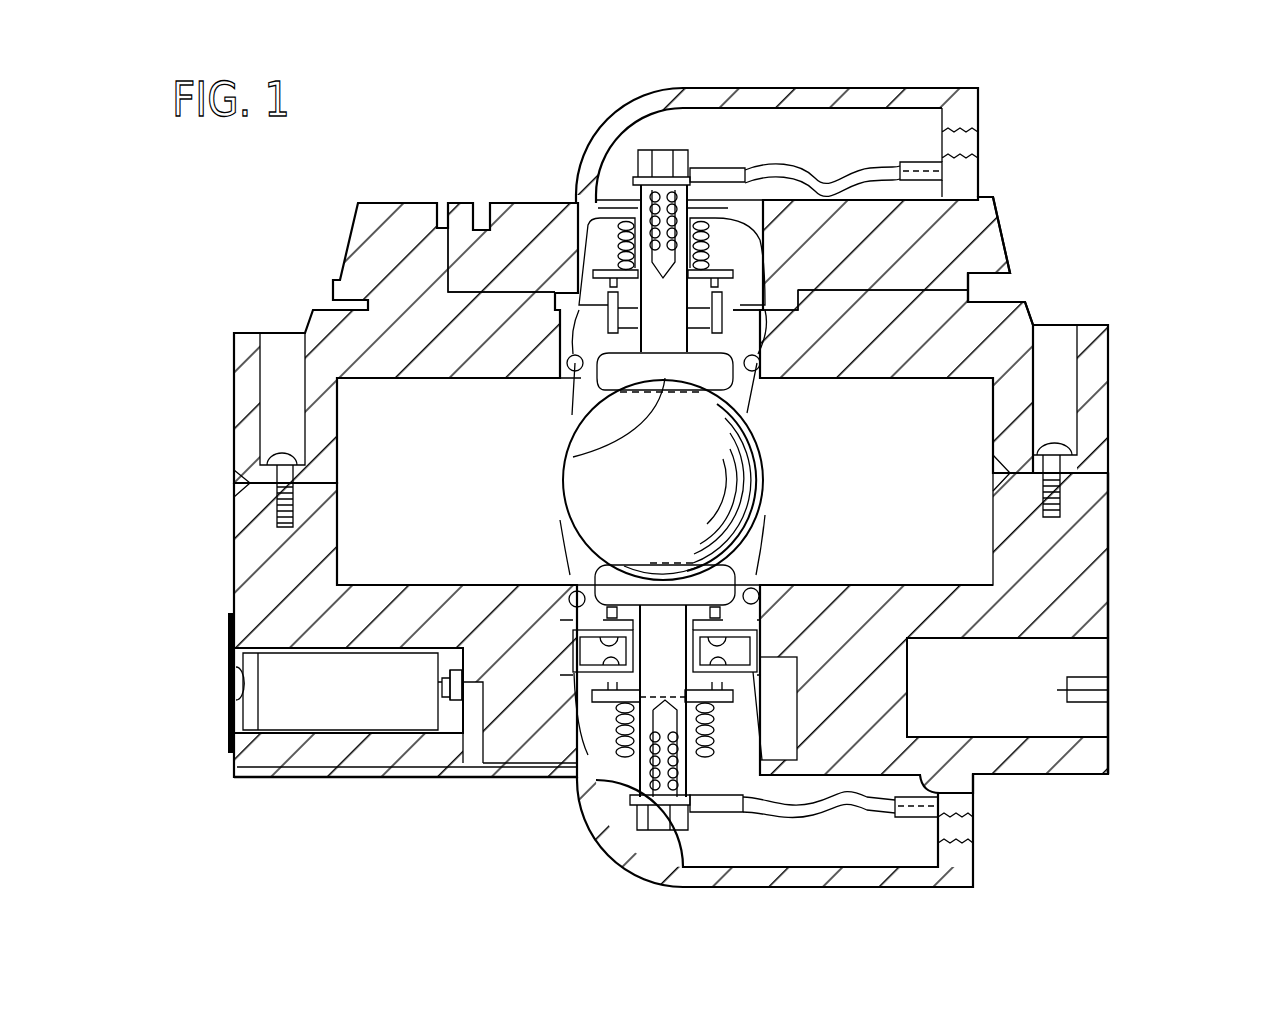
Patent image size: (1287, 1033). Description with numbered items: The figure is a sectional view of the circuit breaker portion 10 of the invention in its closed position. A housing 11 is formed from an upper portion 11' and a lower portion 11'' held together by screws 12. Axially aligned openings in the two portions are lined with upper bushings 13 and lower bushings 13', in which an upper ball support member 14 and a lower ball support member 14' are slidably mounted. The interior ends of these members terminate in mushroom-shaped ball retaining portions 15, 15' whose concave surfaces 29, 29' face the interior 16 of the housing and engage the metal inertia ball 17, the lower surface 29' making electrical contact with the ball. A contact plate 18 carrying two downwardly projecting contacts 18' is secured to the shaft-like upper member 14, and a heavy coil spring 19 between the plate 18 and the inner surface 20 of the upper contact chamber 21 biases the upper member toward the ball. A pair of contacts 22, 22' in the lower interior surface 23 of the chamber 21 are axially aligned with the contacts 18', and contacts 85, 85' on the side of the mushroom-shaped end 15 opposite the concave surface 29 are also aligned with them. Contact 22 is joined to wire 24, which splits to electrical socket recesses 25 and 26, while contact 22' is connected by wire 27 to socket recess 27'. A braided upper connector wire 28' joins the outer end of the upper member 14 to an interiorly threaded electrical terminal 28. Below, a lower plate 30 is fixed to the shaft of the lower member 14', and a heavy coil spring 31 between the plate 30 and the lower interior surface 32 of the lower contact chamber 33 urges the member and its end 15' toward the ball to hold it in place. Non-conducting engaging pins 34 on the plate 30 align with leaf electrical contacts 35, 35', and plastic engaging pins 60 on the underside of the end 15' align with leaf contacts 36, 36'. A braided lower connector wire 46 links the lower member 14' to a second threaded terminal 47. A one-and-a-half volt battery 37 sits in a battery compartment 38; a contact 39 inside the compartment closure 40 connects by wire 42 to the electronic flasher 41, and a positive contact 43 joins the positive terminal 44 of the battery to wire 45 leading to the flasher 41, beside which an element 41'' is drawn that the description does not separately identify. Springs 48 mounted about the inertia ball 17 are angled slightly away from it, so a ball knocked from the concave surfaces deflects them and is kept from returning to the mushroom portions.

The circuit breaker portion 10 is at (1120, 310).
The housing 11 is at (725, 486).
The upper portion 11' is at (1114, 549).
The lower portion 11'' is at (1184, 623).
The screws 12 is at (260, 447).
The upper bushings 13 is at (852, 208).
The lower bushings 13' is at (759, 784).
The upper ball support member 14 is at (661, 192).
The lower ball support member 14' is at (645, 721).
The mushroom-shaped ball retaining portion 15 is at (612, 403).
The mushroom-shaped ball retaining portion 15' is at (635, 549).
The interior 16 is at (870, 486).
The metal inertia ball 17 is at (563, 483).
The contact plate 18 is at (564, 215).
The downwardly projecting contacts 18' is at (681, 234).
The coil-type spring 19 is at (753, 178).
The inner surface 20 is at (795, 180).
The upper contact chamber 21 is at (592, 215).
The contact 22 is at (621, 312).
The contact 22' is at (849, 280).
The lower interior surface 23 is at (575, 250).
The wire 24 is at (513, 287).
The electrical socket recess 25 is at (443, 218).
The electrical socket recess 26 is at (343, 293).
The wire 27 is at (1022, 225).
The electrical socket recess 27' is at (1045, 274).
The interiorly threaded electrical terminal 28 is at (969, 144).
The braided upper connector wire 28' is at (812, 148).
The concave surface 29 is at (592, 425).
The concave surface 29' is at (719, 489).
The lower plate 30 is at (517, 778).
The coil spring 31 is at (580, 765).
The lower interior surface 32 is at (735, 742).
The lower contact chamber 33 is at (750, 723).
The non-conducting engaging pins 34 is at (722, 684).
The leaf electrical contact 35 is at (502, 617).
The leaf electrical contact 35' is at (982, 611).
The leaf electrical contact 36 is at (546, 604).
The leaf electrical contact 36' is at (958, 592).
The battery 37 is at (330, 713).
The battery compartment 38 is at (362, 733).
The contact 39 is at (237, 698).
The battery compartment closure 40 is at (229, 667).
The electronic flash circuit 41 is at (1044, 710).
The nipple 41'' is at (1151, 679).
The wire 42 is at (443, 688).
The positive contact 43 is at (460, 700).
The positive terminal 44 is at (440, 680).
The wire 45 is at (451, 700).
The braided lower connector wire 46 is at (840, 802).
The interiorly threaded electrical terminal 47 is at (975, 830).
The springs 48 is at (575, 375).
The plastic engaging pins 60 is at (573, 592).
The contacts 85 is at (539, 344).
The electrical contacts 85' is at (826, 366).